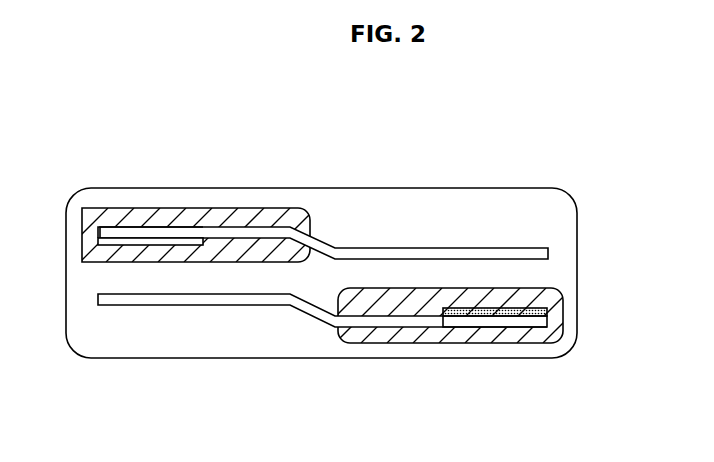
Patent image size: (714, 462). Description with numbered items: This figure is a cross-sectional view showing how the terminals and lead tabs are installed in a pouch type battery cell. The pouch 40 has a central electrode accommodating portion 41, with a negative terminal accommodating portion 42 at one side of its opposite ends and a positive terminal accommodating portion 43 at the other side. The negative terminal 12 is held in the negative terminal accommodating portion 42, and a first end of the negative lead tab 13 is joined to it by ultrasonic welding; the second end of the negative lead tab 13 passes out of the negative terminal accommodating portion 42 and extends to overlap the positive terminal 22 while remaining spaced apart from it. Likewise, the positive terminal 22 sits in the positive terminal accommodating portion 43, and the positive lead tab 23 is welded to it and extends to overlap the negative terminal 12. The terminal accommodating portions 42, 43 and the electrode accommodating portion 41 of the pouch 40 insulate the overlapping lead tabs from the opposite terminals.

The pouch 40 is at (586, 193).
The electrode accommodating portion 41 is at (470, 203).
The negative terminal accommodating portion 42 is at (219, 208).
The positive terminal accommodating portion 43 is at (560, 334).
The negative terminal 12 is at (100, 241).
The negative lead tab 13 is at (330, 245).
The positive terminal 22 is at (546, 312).
The positive lead tab 23 is at (312, 308).